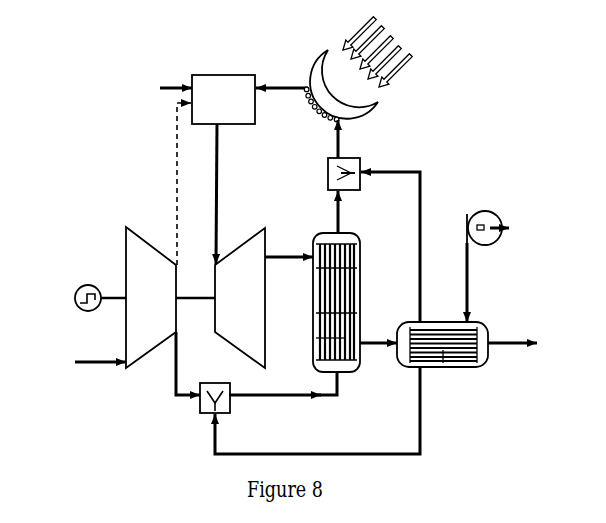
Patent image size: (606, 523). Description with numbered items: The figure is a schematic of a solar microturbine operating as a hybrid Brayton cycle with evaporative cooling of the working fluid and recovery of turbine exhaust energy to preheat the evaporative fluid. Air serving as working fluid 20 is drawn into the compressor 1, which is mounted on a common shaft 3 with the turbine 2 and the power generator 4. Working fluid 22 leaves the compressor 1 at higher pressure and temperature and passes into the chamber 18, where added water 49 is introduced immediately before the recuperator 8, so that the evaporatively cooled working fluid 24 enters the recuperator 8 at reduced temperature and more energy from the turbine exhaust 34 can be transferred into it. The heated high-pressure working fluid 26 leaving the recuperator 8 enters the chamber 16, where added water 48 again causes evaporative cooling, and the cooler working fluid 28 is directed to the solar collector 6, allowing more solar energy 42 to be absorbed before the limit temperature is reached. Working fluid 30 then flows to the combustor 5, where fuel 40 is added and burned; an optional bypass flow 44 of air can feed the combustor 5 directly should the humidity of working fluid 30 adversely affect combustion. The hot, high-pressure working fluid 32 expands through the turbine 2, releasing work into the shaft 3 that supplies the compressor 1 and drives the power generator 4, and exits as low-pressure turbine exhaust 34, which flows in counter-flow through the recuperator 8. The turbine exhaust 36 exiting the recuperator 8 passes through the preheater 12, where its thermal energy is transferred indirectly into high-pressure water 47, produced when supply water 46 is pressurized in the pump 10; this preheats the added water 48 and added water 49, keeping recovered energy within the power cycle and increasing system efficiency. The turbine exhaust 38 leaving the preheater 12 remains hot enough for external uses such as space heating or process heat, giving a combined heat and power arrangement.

The compressor 1 is at (151, 297).
The turbine 2 is at (240, 298).
The shaft 3 is at (158, 295).
The power generator 4 is at (92, 284).
The combustor 5 is at (223, 99).
The solar collector 6 is at (341, 86).
The recuperator 8 is at (336, 302).
The pump 10 is at (490, 209).
The preheater 12 is at (442, 344).
The chamber 16 is at (361, 155).
The chamber 18 is at (199, 413).
The working fluid 20 is at (91, 350).
The working fluid 22 is at (186, 363).
The working fluid 24 is at (283, 390).
The working fluid 26 is at (335, 206).
The working fluid 28 is at (335, 141).
The working fluid 30 is at (286, 84).
The working fluid 32 is at (219, 194).
The turbine exhaust 34 is at (289, 250).
The turbine exhaust 36 is at (378, 330).
The turbine exhaust 38 is at (512, 352).
The fuel 40 is at (164, 79).
The solar energy 42 is at (376, 53).
The bypass flow 44 is at (176, 184).
The supply water 46 is at (512, 228).
The high-pressure water 47 is at (465, 282).
The added water 48 is at (390, 241).
The added water 49 is at (317, 410).